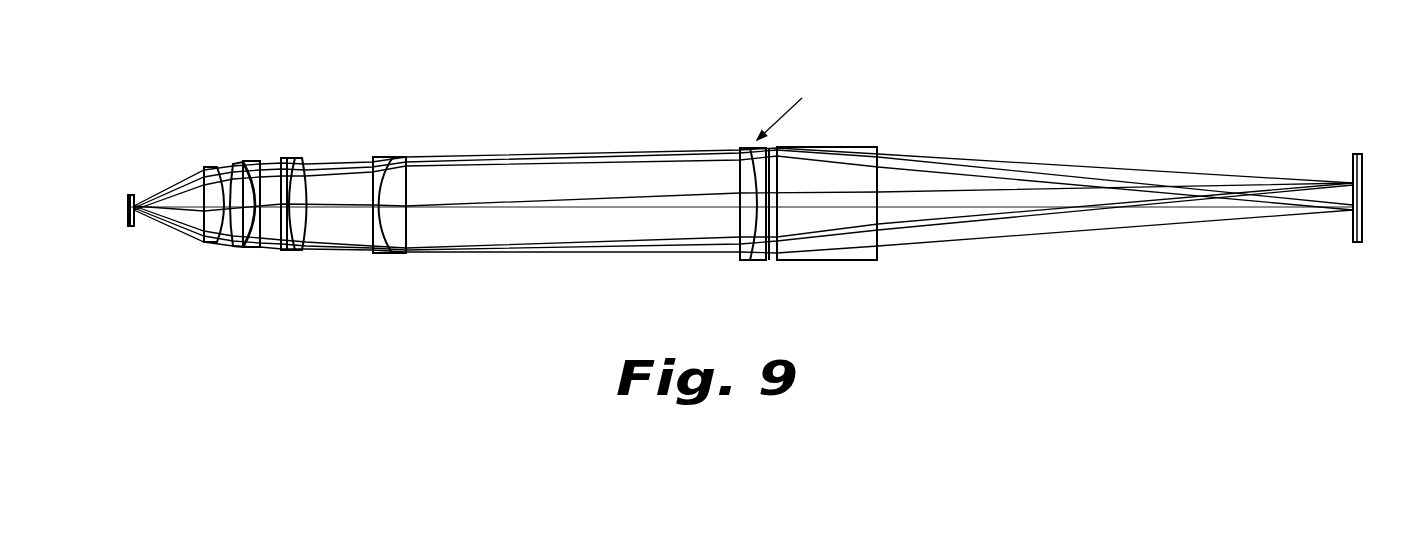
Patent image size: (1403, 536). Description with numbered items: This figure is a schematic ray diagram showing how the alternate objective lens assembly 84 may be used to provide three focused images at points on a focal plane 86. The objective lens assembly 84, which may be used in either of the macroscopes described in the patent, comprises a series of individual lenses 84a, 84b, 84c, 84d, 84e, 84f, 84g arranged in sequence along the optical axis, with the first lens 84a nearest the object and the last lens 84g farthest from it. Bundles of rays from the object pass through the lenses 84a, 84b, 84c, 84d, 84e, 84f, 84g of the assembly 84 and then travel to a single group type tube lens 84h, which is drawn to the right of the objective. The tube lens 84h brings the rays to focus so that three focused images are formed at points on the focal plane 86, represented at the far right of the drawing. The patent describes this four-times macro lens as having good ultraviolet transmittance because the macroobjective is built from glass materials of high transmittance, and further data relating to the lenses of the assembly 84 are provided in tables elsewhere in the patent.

The objective lens assembly 84 is at (536, 173).
The individual lens 84a is at (203, 166).
The individual lens 84b is at (232, 158).
The individual lens 84c is at (257, 156).
The individual lens 84d is at (283, 252).
The individual lens 84e is at (296, 158).
The individual lens 84f is at (380, 254).
The individual lens 84g is at (399, 157).
The single group type tube lens 84h is at (756, 262).
The focal plane 86 is at (1353, 226).